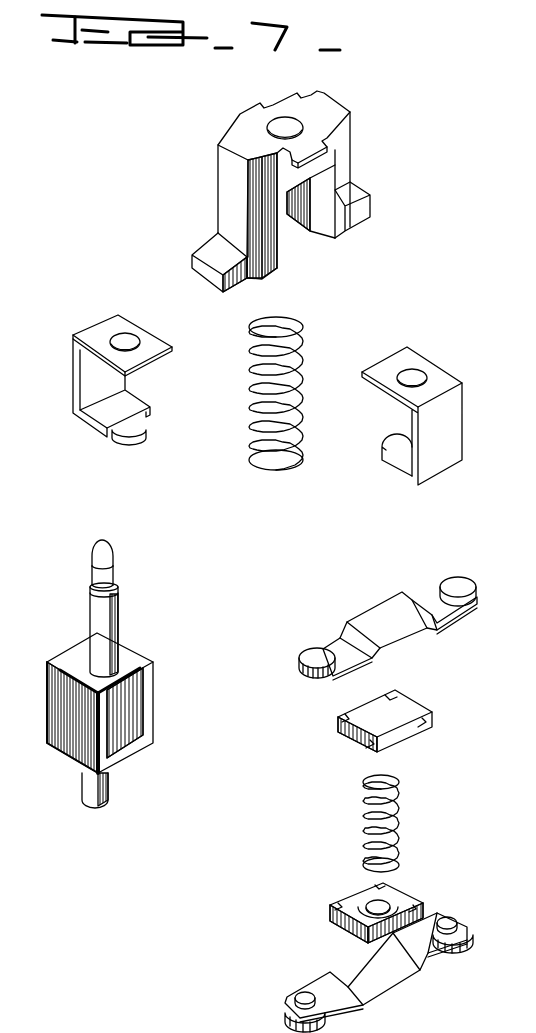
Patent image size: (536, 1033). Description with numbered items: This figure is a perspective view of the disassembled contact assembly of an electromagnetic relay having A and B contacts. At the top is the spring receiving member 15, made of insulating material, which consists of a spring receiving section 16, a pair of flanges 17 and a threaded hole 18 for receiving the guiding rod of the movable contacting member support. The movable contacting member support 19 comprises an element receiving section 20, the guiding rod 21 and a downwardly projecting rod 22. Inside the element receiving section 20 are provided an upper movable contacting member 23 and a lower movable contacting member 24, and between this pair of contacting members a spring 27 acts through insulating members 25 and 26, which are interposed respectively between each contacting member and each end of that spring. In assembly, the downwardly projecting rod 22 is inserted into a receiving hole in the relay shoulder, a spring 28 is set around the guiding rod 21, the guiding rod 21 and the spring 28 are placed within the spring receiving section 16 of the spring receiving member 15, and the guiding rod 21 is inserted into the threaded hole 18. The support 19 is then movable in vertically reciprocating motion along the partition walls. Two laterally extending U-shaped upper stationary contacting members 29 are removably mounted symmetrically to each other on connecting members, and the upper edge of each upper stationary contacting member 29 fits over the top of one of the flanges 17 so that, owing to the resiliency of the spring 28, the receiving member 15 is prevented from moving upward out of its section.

The spring receiving member 15 is at (284, 181).
The spring receiving section 16 is at (295, 238).
The flanges 17 is at (203, 252).
The threaded hole 18 is at (277, 130).
The movable contacting member support 19 is at (125, 675).
The element receiving section 20 is at (122, 747).
The guiding rod 21 is at (93, 608).
The downwardly projecting rod 22 is at (92, 788).
The upper movable contacting member 23 is at (397, 622).
The lower movable contacting member 24 is at (377, 992).
The insulating member 25 is at (360, 725).
The insulating member 26 is at (350, 913).
The spring 27 is at (398, 790).
The spring 28 is at (305, 332).
The upper stationary contacting member 29 is at (88, 333).